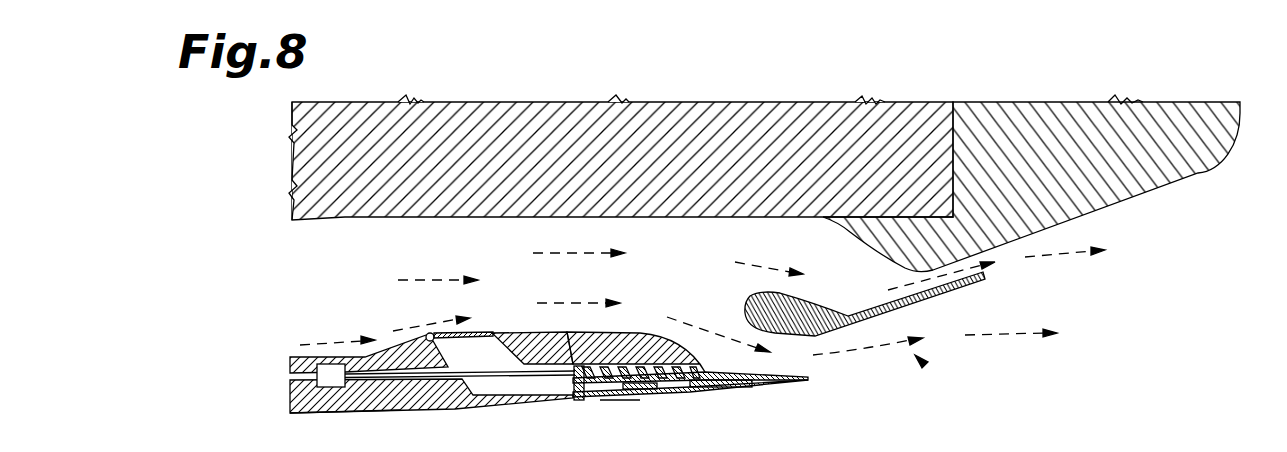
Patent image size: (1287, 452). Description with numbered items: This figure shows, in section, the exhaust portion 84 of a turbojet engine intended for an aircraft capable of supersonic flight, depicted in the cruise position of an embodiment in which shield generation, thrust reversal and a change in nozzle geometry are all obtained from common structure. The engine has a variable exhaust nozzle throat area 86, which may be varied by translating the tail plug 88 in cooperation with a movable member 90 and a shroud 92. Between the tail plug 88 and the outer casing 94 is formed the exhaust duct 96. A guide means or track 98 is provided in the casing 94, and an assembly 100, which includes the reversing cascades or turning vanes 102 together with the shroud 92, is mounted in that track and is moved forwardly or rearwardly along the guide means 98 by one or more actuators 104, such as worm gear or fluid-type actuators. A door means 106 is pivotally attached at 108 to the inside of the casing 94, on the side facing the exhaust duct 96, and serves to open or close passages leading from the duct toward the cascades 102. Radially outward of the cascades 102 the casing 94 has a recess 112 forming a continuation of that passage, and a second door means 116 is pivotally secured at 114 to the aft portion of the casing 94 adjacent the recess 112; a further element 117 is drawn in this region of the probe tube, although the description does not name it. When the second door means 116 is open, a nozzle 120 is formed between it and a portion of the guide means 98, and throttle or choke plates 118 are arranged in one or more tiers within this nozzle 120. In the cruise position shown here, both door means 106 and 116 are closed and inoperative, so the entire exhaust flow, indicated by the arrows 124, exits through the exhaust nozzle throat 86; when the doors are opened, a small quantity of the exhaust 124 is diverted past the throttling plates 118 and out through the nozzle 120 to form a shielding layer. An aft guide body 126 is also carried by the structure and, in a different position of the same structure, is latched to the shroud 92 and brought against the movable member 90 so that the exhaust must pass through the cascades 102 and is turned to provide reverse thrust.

The exhaust portion 84 is at (992, 83).
The exhaust nozzle throat area 86 is at (925, 364).
The tail plug 88 is at (698, 82).
The movable member 90 is at (773, 305).
The shroud 92 is at (781, 388).
The outer casing 94 is at (345, 413).
The exhaust duct 96 is at (488, 257).
The guide means or track 98 is at (424, 381).
The assembly 100 is at (735, 368).
The reversing cascades or turning vanes 102 is at (644, 344).
The actuator 104 is at (318, 388).
The door means 106 is at (470, 331).
The pivotal attachment 108 is at (426, 334).
The recess 112 is at (518, 388).
The pivotal attachment 114 is at (590, 398).
The second door means 116 is at (675, 392).
The insert 117 is at (730, 390).
The throttle or choke plates 118 is at (642, 395).
The nozzle 120 is at (672, 442).
The exhaust flow 124 is at (593, 253).
The aft guide body 126 is at (610, 331).